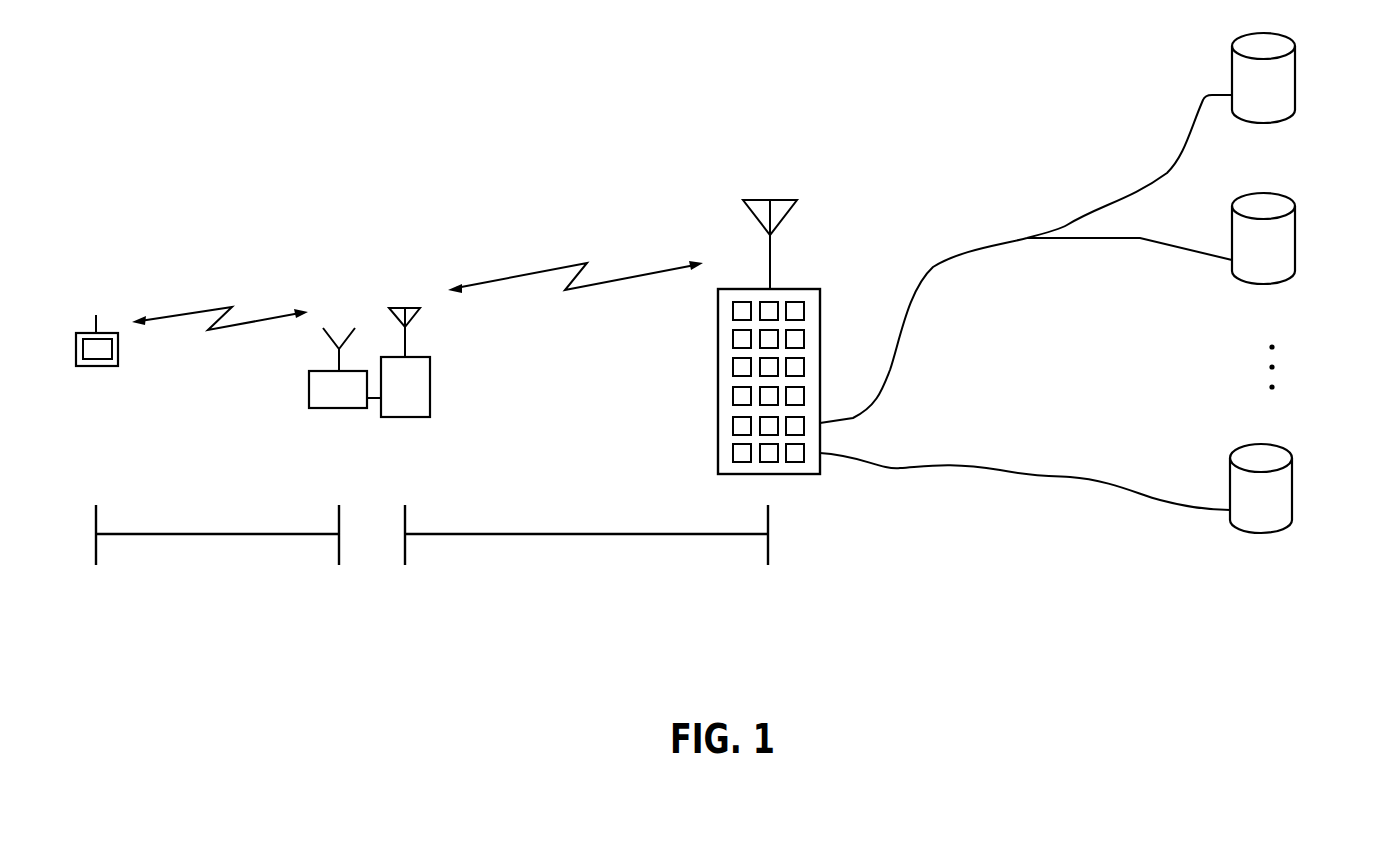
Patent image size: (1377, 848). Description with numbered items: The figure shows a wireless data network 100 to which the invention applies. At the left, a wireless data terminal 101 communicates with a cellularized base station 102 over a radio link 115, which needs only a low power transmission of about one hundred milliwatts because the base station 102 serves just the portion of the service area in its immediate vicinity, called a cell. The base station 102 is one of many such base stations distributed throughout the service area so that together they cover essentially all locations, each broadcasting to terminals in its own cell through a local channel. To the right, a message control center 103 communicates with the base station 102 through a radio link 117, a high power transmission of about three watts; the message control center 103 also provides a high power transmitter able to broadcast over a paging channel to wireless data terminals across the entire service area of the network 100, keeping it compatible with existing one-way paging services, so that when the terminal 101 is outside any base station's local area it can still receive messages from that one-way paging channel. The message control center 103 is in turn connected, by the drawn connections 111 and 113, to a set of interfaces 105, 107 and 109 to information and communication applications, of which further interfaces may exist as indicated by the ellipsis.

The wireless data network 100 is at (463, 214).
The wireless data terminal 101 is at (83, 332).
The cellularized base station 102 is at (428, 425).
The message control center 103 is at (808, 288).
The interface to information and communication applications 105 is at (1295, 102).
The interface to information and communication applications 107 is at (1295, 262).
The interface to information and communication applications 109 is at (1292, 502).
The network link 111 is at (1040, 230).
The network link 113 is at (975, 465).
The radio link 115 is at (262, 534).
The radio link 117 is at (622, 534).